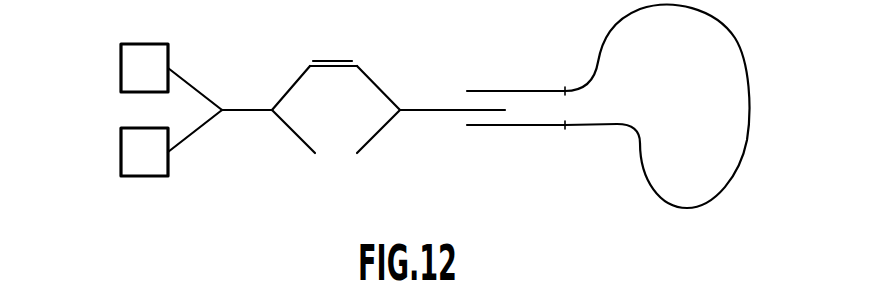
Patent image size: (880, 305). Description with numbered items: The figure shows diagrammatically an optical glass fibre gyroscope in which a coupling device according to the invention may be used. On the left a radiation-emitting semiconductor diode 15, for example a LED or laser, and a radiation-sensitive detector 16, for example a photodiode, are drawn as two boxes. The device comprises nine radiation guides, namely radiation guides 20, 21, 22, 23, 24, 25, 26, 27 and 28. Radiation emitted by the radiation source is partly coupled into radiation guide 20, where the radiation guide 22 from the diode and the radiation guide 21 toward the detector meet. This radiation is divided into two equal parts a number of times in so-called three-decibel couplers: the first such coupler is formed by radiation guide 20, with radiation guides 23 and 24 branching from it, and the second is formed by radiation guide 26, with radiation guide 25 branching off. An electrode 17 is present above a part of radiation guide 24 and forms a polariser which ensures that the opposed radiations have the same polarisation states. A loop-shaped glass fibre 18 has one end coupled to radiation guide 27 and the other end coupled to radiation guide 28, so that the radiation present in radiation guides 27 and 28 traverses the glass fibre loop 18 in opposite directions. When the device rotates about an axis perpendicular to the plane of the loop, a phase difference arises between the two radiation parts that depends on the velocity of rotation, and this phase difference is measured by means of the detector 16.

The radiation-emitting semiconductor diode 15 is at (121, 62).
The radiation-sensitive detector 16 is at (121, 152).
The electrode 17 is at (328, 60).
The loop-shaped glass fibre 18 is at (613, 126).
The radiation guide 20 is at (242, 112).
The radiation guide 21 is at (194, 133).
The radiation guide 22 is at (198, 91).
The radiation guide 23 is at (290, 130).
The radiation guide 24 is at (290, 86).
The radiation guide 25 is at (383, 126).
The radiation guide 26 is at (438, 111).
The radiation guide 27 is at (502, 90).
The radiation guide 28 is at (512, 126).